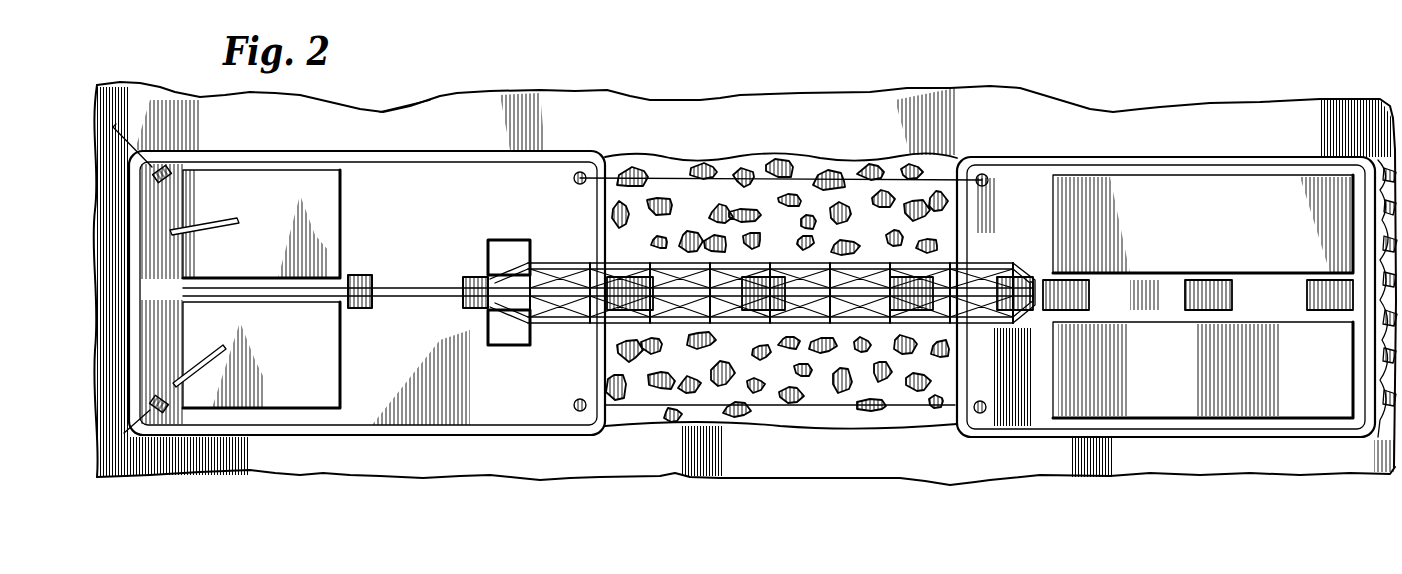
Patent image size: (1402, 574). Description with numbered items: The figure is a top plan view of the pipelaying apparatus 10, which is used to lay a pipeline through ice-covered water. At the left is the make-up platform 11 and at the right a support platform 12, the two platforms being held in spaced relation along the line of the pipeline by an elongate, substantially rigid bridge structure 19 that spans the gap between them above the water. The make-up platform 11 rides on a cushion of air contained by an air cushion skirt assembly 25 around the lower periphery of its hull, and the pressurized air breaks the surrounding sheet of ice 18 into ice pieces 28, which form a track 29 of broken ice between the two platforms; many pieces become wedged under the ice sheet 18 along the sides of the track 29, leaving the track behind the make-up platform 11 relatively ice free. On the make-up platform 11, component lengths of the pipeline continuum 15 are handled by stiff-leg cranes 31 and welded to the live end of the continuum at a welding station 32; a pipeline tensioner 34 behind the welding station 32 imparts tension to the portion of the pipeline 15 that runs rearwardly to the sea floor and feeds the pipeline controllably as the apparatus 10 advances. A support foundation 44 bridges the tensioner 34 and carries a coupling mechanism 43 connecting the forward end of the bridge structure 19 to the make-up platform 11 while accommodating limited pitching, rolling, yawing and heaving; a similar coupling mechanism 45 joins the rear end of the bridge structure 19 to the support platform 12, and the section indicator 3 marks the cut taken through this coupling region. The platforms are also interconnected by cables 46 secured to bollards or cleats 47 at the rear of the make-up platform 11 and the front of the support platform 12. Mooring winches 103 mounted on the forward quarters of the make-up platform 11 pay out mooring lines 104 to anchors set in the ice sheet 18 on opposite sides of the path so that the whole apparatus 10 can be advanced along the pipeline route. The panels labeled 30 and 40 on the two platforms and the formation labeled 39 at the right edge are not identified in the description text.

The pipelaying apparatus 10 is at (908, 125).
The make-up platform 11 is at (398, 182).
The support platform 12 is at (1150, 175).
The pipeline continuum 15 is at (428, 302).
The ice sheet 18 is at (535, 102).
The bridge structure 19 is at (697, 258).
The air cushion skirt assembly 25 is at (398, 437).
The ice pieces 28 is at (838, 408).
The track of broken ice 29 is at (781, 265).
The panel 30 is at (276, 183).
The stiff-leg cranes 31 is at (172, 382).
The welding station 32 is at (363, 275).
The pipeline tensioner mechanism 34 is at (468, 300).
The rock column 39 is at (1370, 385).
The panel 40 is at (1212, 241).
The coupling mechanism 43 is at (506, 345).
The support foundation 44 is at (505, 243).
The coupling mechanism 45 is at (1040, 254).
The cables 46 is at (850, 180).
The bollards or cleats 47 is at (574, 178).
The mooring winches 103 is at (166, 168).
The mooring lines 104 is at (113, 127).
The section line 3 is at (455, 238).